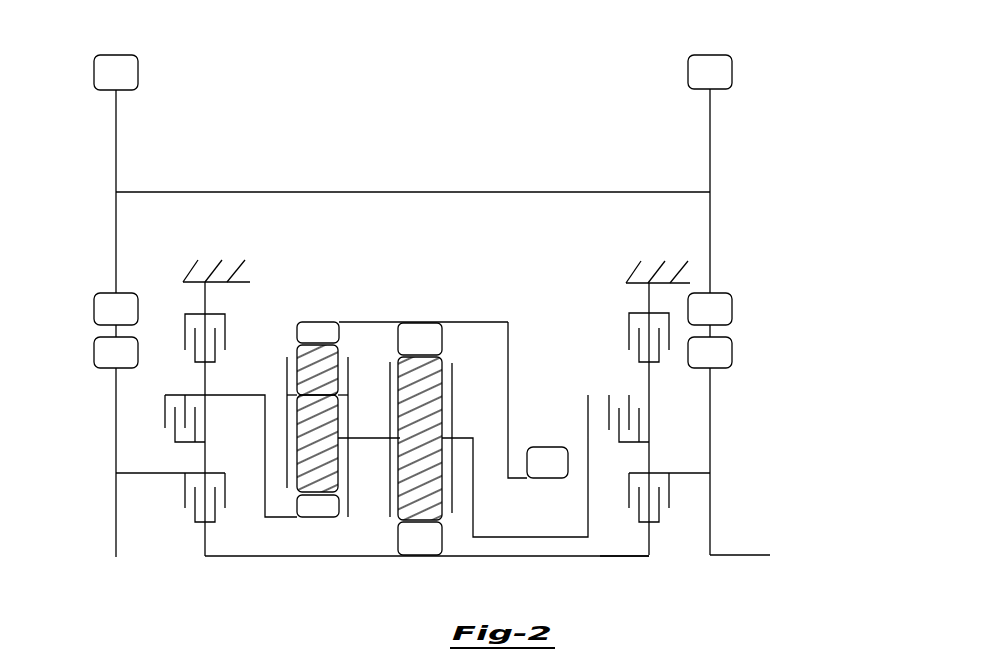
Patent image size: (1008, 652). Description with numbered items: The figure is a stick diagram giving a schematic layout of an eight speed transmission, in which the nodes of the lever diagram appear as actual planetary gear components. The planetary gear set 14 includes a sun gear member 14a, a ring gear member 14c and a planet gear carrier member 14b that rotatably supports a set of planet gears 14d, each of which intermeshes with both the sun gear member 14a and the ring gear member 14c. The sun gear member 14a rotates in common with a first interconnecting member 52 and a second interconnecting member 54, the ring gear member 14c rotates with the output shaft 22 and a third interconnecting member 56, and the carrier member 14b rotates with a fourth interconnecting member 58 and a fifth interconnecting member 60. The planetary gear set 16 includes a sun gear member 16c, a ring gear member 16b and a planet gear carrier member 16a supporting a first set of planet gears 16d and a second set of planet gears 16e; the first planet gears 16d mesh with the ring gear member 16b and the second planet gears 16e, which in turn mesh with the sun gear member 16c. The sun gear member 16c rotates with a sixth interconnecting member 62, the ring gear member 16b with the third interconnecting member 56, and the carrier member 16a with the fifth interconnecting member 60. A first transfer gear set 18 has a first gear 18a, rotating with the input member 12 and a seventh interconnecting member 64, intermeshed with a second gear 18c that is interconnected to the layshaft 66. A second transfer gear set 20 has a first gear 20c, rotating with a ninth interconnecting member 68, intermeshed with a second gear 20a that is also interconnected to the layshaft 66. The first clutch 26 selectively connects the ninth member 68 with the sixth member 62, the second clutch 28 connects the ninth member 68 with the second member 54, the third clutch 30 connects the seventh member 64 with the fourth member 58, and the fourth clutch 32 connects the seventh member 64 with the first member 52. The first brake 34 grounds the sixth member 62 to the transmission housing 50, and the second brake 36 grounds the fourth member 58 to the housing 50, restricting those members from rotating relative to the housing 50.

The input member 12 is at (760, 553).
The planetary gear set 14 is at (444, 458).
The sun gear member 14a is at (405, 540).
The planet gear carrier member 14b is at (452, 490).
The ring gear member 14c is at (428, 325).
The planet gears 14d is at (430, 372).
The planetary gear set 16 is at (305, 438).
The planet gear carrier member 16a is at (350, 467).
The ring gear member 16b is at (322, 325).
The sun gear member 16c is at (297, 507).
The first set of planet gears 16d is at (328, 362).
The second set of planet gears 16e is at (300, 453).
The first transfer gear or co-planar gear set 18 is at (736, 332).
The first gear 18a is at (710, 400).
The second gear 18c is at (710, 135).
The second transfer gear or co-planar gear set 20 is at (98, 334).
The second gear 20a is at (116, 135).
The first gear 20c is at (116, 415).
The output shaft 22 is at (509, 342).
The first clutch 26 is at (166, 395).
The second clutch 28 is at (185, 490).
The third clutch 30 is at (649, 416).
The fourth clutch 32 is at (665, 488).
The first brake 34 is at (227, 318).
The second brake 36 is at (630, 330).
The transmission housing 50 is at (250, 282).
The first shaft or interconnecting member 52 is at (610, 557).
The second shaft or interconnecting member 54 is at (240, 556).
The third shaft or interconnecting member 56 is at (372, 322).
The fourth shaft or interconnecting member 58 is at (475, 440).
The fifth shaft or interconnecting member 60 is at (357, 438).
The sixth shaft or interconnecting member 62 is at (243, 395).
The seventh shaft or interconnecting member 64 is at (675, 472).
The layshaft 66 is at (397, 192).
The ninth shaft or interconnecting member 68 is at (155, 472).